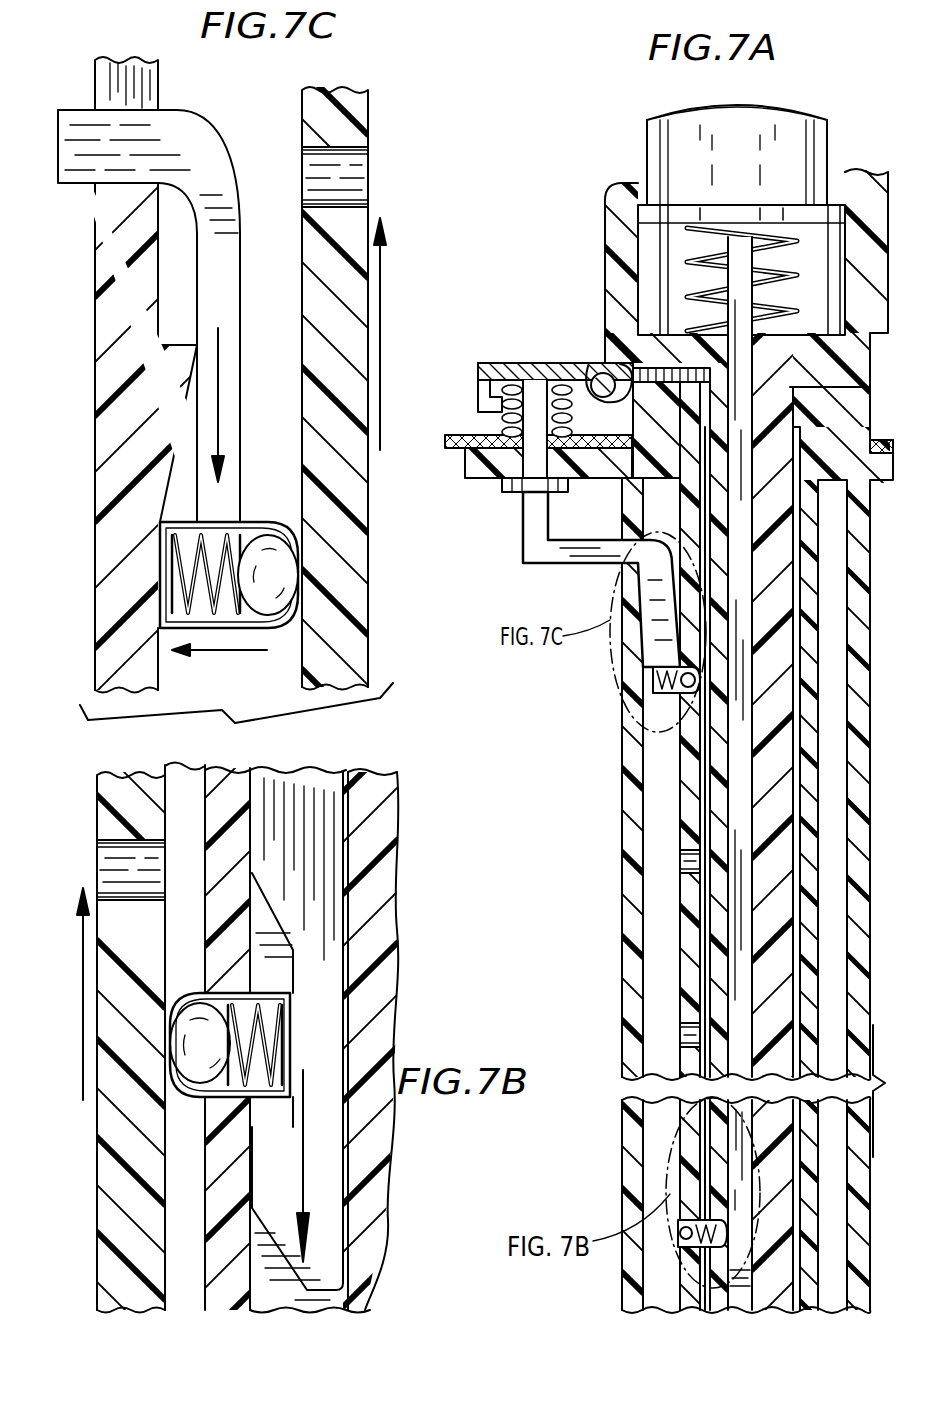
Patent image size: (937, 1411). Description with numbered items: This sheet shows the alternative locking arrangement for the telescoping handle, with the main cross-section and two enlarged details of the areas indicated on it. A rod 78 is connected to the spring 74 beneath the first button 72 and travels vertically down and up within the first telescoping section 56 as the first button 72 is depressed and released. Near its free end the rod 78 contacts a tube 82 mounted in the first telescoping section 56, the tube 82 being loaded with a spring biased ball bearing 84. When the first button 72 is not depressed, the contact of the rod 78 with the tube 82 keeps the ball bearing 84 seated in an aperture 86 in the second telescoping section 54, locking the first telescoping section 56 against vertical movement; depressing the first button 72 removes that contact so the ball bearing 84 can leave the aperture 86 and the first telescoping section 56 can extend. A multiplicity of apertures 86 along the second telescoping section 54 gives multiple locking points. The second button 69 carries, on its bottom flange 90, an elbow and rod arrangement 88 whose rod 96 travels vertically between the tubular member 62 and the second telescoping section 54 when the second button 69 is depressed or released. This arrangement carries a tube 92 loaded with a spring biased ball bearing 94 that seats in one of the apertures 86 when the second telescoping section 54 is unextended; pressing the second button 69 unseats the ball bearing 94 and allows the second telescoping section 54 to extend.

In FIG. 7C, the second telescoping section 54 is at (368, 626).
In FIG. 7B, the second telescoping section 54 is at (113, 1118).
In FIG. 7A, the first telescoping section 56 is at (797, 823).
In FIG. 7A, the tubular member 62 is at (623, 914).
In FIG. 7A, the second button 69 is at (527, 362).
In FIG. 7A, the first button 72 is at (793, 108).
In FIG. 7A, the spring 74 is at (787, 282).
In FIG. 7B, the rod 78 is at (320, 768).
In FIG. 7A, the rod 78 is at (752, 662).
In FIG. 7B, the tube 82 is at (252, 1094).
In FIG. 7B, the ball bearing 84 is at (173, 1007).
In FIG. 7C, the aperture 86 is at (373, 182).
In FIG. 7B, the aperture 86 is at (110, 837).
In FIG. 7A, the aperture 86 is at (688, 1024).
In FIG. 7A, the elbow and rod arrangement 88 is at (503, 554).
In FIG. 7A, the bottom flange 90 is at (523, 493).
In FIG. 7C, the tube 92 is at (173, 517).
In FIG. 7C, the ball bearing 94 is at (297, 553).
In FIG. 7C, the rod 96 is at (241, 166).